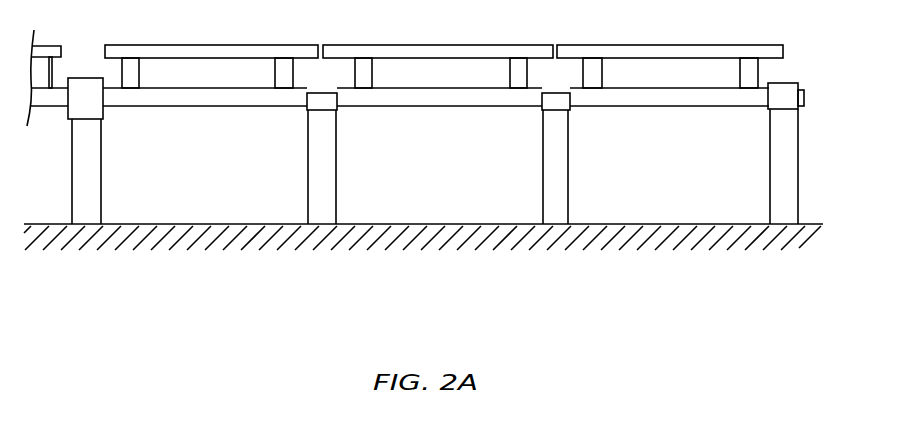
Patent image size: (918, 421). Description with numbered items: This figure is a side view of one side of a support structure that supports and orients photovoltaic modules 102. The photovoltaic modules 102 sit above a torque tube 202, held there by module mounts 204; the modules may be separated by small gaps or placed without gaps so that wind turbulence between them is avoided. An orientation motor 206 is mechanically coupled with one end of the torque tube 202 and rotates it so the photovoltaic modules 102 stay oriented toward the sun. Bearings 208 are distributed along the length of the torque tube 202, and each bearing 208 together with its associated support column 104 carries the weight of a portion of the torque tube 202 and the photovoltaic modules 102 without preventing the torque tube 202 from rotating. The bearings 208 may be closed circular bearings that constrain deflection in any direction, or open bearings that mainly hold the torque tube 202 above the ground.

The photovoltaic module 102 is at (211, 44).
The support column 104 is at (119, 171).
The torque tube 202 is at (166, 121).
The module mount 204 is at (399, 73).
The orientation motor 206 is at (120, 111).
The bearing 208 is at (287, 115).